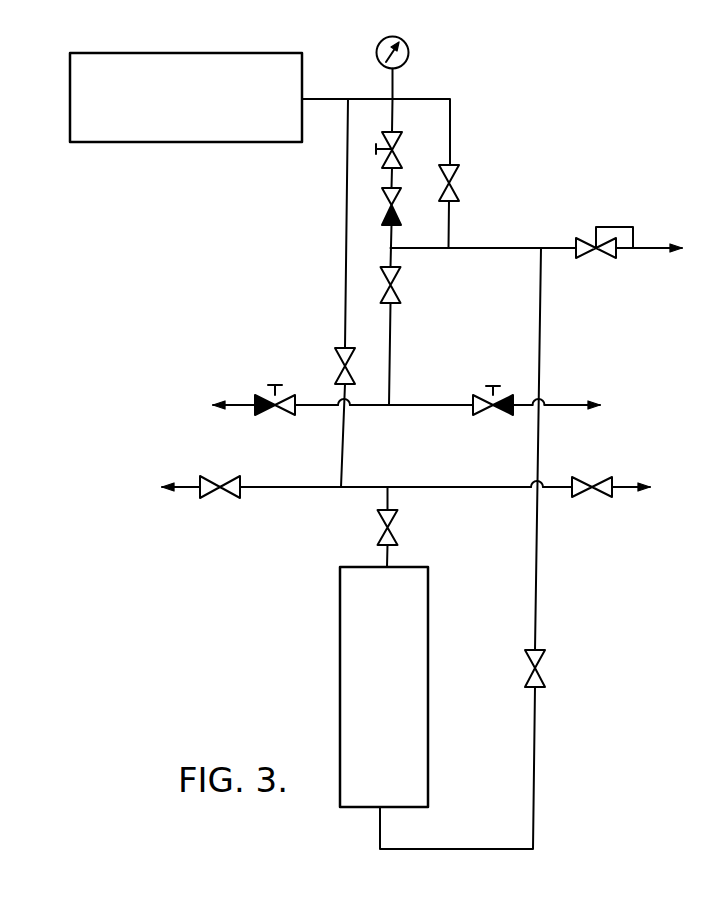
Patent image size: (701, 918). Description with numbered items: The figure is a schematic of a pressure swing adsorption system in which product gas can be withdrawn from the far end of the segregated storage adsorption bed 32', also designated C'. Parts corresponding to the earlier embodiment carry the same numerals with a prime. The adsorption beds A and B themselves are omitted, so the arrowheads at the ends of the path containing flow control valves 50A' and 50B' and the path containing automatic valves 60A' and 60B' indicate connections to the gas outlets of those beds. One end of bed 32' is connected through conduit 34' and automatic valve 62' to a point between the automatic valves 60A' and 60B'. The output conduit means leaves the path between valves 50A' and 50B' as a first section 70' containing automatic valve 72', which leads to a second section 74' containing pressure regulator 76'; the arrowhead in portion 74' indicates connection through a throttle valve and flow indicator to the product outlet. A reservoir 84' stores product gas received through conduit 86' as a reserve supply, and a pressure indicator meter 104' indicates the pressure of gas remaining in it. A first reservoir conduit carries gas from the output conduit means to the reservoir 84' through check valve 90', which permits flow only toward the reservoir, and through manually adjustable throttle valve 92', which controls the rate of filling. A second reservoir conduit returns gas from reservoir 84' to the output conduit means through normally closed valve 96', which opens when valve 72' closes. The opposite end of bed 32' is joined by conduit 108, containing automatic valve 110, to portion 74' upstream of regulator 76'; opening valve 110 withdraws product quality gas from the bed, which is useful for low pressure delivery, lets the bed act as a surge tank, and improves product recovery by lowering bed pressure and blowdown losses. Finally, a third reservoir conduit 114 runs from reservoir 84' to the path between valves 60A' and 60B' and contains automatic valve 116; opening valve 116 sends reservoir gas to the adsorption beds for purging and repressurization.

The reservoir 84' is at (186, 117).
The conduit 86' is at (347, 71).
The pressure indicator meter 104' is at (440, 145).
The throttle valve 92' is at (412, 138).
The valve means 96' is at (478, 170).
The check valve 90' is at (413, 213).
The second section of output conduit means 74' is at (537, 220).
The pressure regulator 76' is at (619, 265).
The third reservoir conduit 114 is at (345, 248).
The automatic valve 116 is at (334, 350).
The automatic valve 72' is at (427, 285).
The first section of output conduit means 70' is at (429, 354).
The flow control valve 50A' is at (266, 387).
The flow control valve 50B' is at (475, 390).
The first automatic valve 60A' is at (275, 471).
The second automatic valve 60B' is at (521, 471).
The automatic valve 62' is at (418, 523).
The conduit 34' is at (425, 553).
The segregated storage adsorption bed 32' is at (352, 687).
The conduit 108 is at (537, 576).
The automatic valve 110 is at (545, 660).